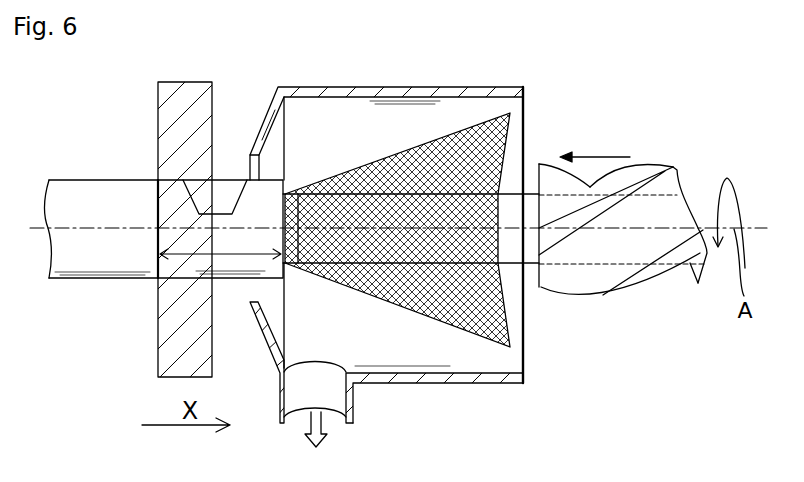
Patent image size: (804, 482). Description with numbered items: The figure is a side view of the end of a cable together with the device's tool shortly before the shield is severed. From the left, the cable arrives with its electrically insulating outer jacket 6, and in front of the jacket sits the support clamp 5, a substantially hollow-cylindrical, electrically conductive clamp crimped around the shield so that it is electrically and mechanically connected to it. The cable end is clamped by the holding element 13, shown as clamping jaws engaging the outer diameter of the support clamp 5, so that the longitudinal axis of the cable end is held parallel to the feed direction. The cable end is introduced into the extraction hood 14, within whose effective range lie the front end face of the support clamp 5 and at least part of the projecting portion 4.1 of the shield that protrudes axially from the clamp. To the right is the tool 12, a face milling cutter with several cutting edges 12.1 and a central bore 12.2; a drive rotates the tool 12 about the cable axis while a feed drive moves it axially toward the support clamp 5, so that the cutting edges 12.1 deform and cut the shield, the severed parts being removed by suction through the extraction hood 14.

The outer jacket 6 is at (82, 188).
The holding element 13 is at (159, 148).
The support clamp 5 is at (227, 279).
The projecting portion 4.1 is at (318, 205).
The extraction hood 14 is at (423, 385).
The tool 12 is at (657, 181).
The cutting edges 12.1 is at (542, 260).
The central bore 12.2 is at (660, 240).